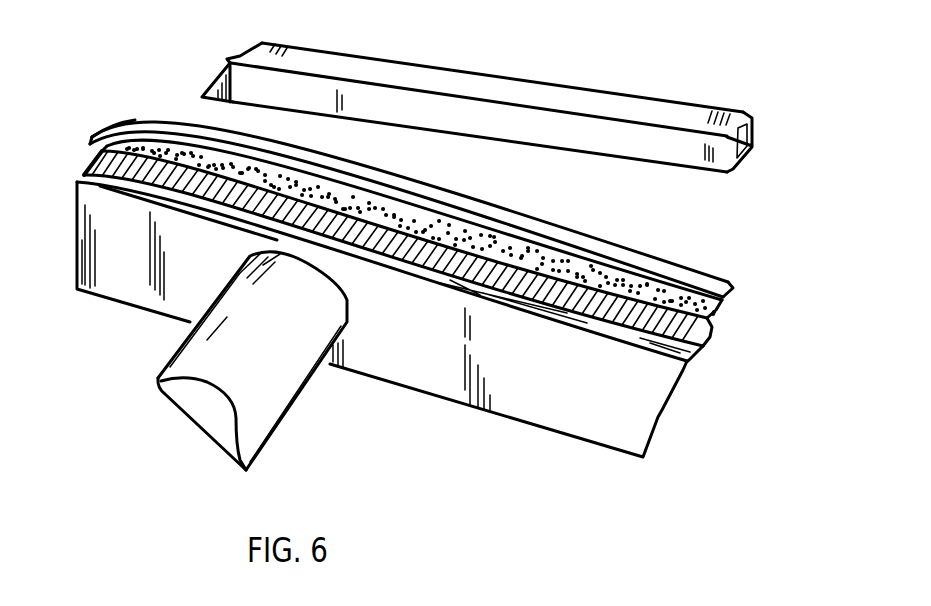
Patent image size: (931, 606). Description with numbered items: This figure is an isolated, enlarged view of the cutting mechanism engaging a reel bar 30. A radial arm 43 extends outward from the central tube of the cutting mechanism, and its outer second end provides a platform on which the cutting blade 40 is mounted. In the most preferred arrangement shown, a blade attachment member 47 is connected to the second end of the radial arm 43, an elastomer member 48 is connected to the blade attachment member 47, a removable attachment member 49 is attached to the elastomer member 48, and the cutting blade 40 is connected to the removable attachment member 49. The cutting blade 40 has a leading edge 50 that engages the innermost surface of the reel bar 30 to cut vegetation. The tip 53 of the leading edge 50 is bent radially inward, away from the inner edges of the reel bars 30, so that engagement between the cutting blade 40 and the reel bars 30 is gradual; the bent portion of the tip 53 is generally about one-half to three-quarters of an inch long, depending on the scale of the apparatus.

The reel bar 30 is at (462, 69).
The cutting blade 40 is at (670, 275).
The radial arm 43 is at (280, 430).
The blade attachment member 47 is at (663, 412).
The elastomer member 48 is at (100, 150).
The removable attachment member 49 is at (712, 317).
The leading edge 50 is at (173, 120).
The tip 53 is at (90, 140).